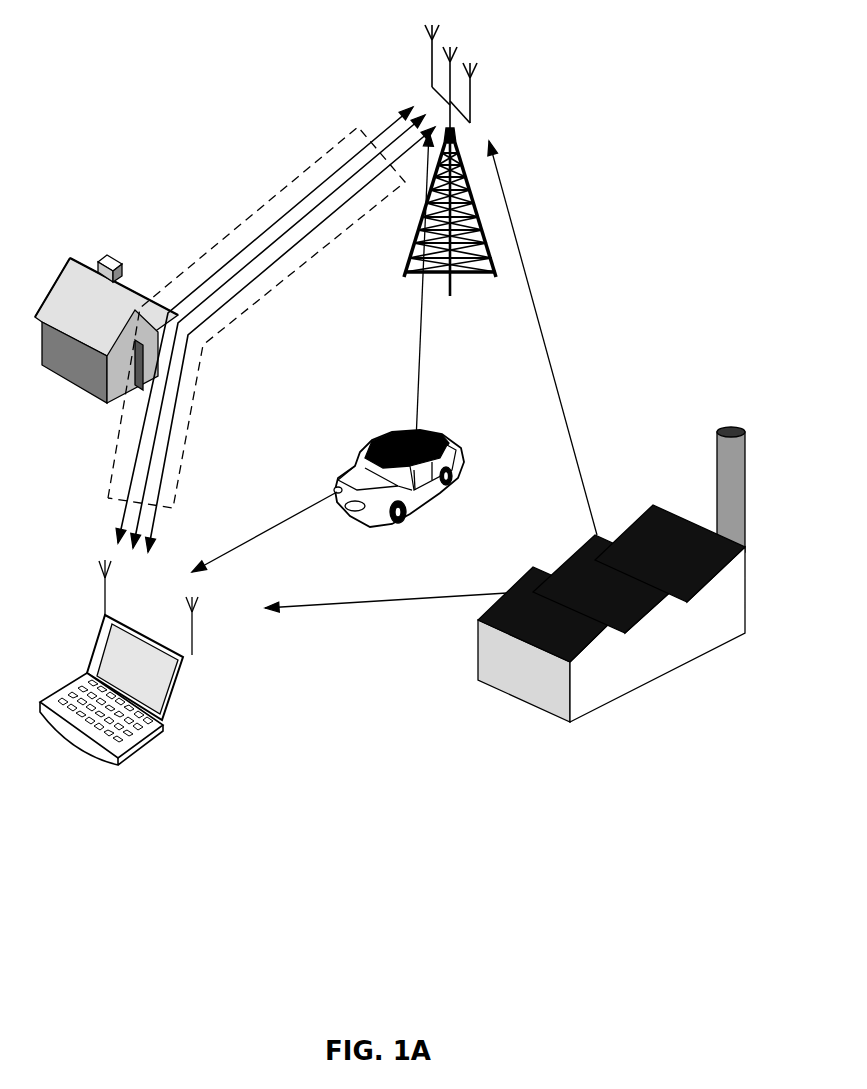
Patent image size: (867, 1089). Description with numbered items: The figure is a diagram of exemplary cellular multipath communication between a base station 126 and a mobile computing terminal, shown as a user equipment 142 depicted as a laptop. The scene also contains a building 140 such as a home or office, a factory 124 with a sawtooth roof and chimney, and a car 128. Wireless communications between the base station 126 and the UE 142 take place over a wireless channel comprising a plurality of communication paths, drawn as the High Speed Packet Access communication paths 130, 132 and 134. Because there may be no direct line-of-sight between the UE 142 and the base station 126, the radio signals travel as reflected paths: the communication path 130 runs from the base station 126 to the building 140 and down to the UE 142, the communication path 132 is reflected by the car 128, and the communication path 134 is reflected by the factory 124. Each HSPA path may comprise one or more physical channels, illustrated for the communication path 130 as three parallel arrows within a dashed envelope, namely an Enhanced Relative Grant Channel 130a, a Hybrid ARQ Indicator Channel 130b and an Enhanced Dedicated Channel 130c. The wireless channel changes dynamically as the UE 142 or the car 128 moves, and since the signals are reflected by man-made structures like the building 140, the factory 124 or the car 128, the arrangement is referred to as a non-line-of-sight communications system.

The factory 124 is at (583, 713).
The base station 126 is at (450, 296).
The car 128 is at (402, 518).
The HSPA communication path 130 is at (188, 438).
The Enhanced Relative Grant Channel (E-RGCH) 130a is at (357, 153).
The Hybrid ARQ Indicator Channel (E-HICH) 130b is at (318, 190).
The Enhanced Dedicated Channel (E-DCH) 130c is at (228, 300).
The HSPA communication path 132 is at (420, 392).
The HSPA communication path 134 is at (563, 333).
The building 140 is at (72, 258).
The user equipment (UE) 142 is at (185, 678).